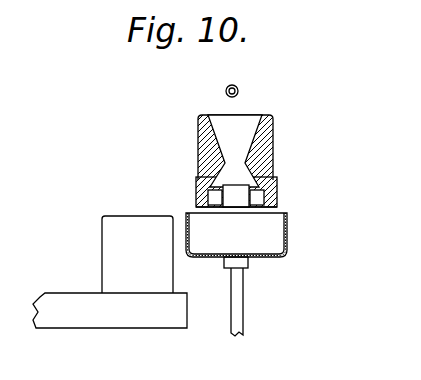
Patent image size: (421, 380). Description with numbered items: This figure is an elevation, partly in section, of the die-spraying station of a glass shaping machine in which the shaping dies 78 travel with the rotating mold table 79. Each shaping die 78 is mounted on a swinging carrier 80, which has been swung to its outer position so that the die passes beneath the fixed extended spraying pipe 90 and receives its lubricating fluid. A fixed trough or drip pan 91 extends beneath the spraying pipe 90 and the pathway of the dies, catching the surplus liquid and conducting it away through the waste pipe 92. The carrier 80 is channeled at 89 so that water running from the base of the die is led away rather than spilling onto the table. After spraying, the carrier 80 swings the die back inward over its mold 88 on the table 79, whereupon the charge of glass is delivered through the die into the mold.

The shaping die 78 is at (273, 147).
The rotating mold table 79 is at (127, 318).
The swinging carrier 80 is at (277, 195).
The mold 88 is at (107, 254).
The channel 89 is at (277, 205).
The spraying pipe 90 is at (239, 91).
The drip pan 91 is at (287, 235).
The waste pipe 92 is at (243, 288).